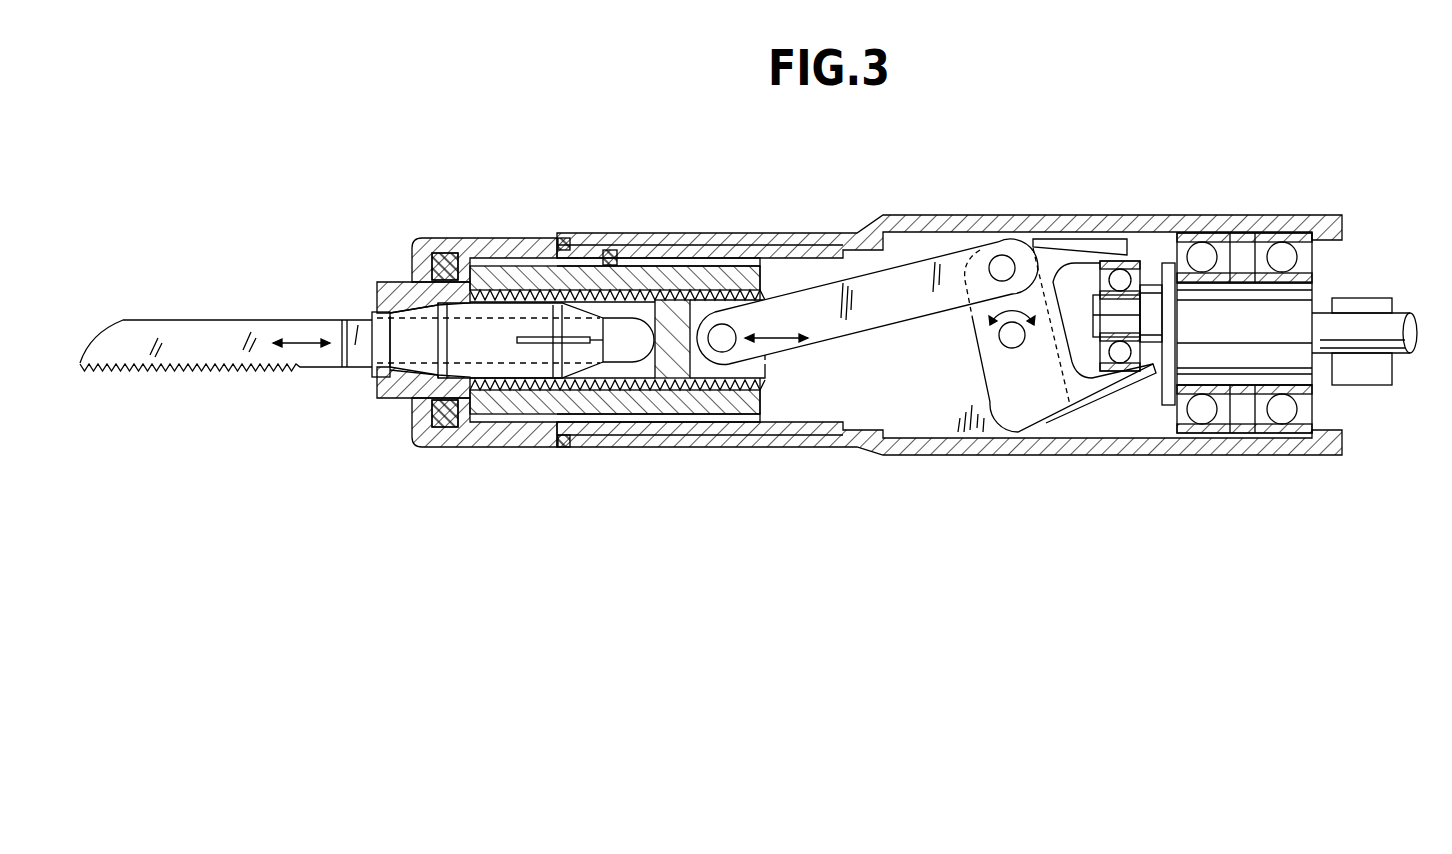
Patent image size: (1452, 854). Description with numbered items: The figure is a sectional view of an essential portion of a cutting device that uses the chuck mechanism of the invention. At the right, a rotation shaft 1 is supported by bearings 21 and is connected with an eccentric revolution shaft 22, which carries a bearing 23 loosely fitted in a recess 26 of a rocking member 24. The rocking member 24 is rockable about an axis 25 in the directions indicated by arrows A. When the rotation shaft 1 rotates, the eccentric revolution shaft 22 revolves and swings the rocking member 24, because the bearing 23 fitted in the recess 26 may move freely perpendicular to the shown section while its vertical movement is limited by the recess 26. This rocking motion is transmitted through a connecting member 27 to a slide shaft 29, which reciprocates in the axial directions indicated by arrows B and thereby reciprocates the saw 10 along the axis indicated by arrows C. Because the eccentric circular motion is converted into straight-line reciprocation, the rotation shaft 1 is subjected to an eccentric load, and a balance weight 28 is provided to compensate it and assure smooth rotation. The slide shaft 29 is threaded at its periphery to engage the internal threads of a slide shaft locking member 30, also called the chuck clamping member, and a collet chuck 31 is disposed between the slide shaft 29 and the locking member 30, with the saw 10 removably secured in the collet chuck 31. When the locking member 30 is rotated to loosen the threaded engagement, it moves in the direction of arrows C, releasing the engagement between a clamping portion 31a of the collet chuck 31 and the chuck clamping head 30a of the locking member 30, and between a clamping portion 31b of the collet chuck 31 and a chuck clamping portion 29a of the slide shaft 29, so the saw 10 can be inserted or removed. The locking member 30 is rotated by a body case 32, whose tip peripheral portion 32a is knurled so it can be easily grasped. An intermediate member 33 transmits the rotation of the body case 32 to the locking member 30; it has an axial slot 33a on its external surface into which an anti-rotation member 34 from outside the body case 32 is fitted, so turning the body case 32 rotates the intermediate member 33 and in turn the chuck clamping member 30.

The rotation shaft 1 is at (1317, 310).
The saw 10 is at (333, 330).
The bearings 21 is at (1220, 250).
The eccentric revolution shaft 22 is at (1150, 287).
The bearing 23 is at (1133, 262).
The rocking member 24 is at (1060, 252).
The axis 25 is at (1007, 335).
The recess 26 is at (1080, 340).
The connecting member 27 is at (890, 318).
The balance weight 28 is at (1368, 376).
The slide shaft 29 is at (657, 302).
The chuck clamping portion 29a is at (577, 302).
The slide shaft locking member 30 is at (503, 287).
The chuck clamping head 30a is at (403, 297).
The collet chuck 31 is at (470, 353).
The clamping portion 31a is at (410, 344).
The clamping portion 31b is at (572, 353).
The body case 32 is at (465, 238).
The tip peripheral portion 32a is at (434, 238).
The intermediate member 33 is at (540, 407).
The slot 33a is at (730, 262).
The anti-rotation member 34 is at (610, 250).
The arrows A is at (1019, 334).
The arrows B is at (776, 325).
The arrows C is at (297, 347).